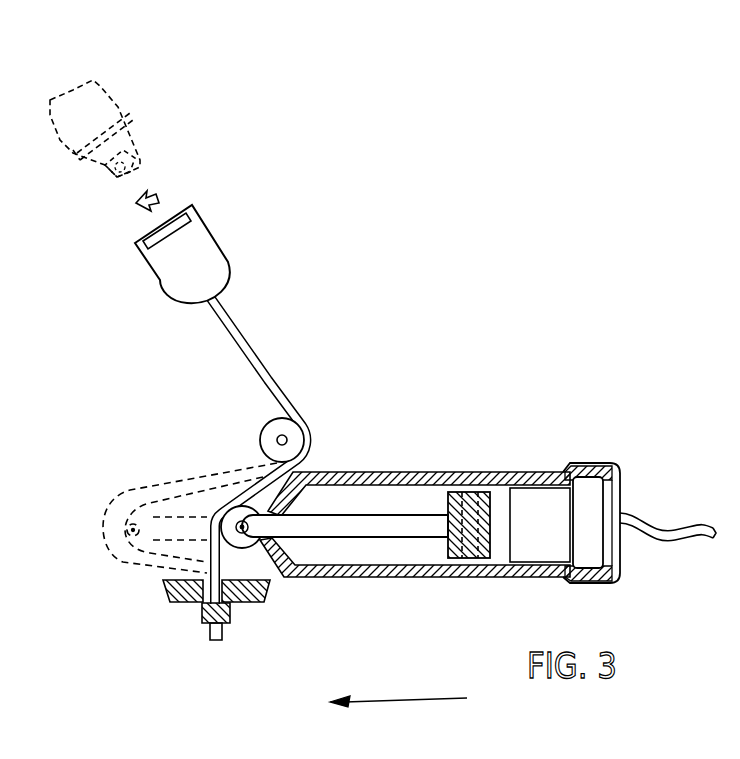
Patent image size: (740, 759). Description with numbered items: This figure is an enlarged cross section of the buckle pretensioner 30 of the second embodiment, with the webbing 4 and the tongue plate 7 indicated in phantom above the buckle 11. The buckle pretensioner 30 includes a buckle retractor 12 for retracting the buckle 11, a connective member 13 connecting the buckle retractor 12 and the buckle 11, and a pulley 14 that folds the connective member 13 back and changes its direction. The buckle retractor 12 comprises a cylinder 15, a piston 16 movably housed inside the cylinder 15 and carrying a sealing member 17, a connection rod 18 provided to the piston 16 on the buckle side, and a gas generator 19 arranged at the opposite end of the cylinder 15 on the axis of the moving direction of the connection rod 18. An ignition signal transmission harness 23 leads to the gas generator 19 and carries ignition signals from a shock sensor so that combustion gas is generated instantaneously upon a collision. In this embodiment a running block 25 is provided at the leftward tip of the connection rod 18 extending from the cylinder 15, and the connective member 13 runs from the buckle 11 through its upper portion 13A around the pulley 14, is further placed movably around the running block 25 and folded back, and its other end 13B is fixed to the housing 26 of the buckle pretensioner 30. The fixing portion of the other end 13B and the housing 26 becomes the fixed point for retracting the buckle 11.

The webbing 4 is at (98, 103).
The tongue plate 7 is at (140, 123).
The buckle 11 is at (198, 248).
The buckle retractor 12 is at (597, 353).
The connective member 13 is at (260, 362).
The one end of connective member 13A is at (223, 307).
The other end of connective member 13B is at (219, 642).
The pulley 14 is at (275, 433).
The cylinder 15 is at (523, 572).
The piston 16 is at (480, 560).
The sealing member 17 is at (463, 490).
The connection rod 18 is at (333, 525).
The gas generator 19 is at (590, 500).
The ignition signal transmission harness 23 is at (660, 522).
The running block 25 is at (243, 548).
The housing 26 is at (182, 603).
The buckle pretensioner 30 is at (485, 283).